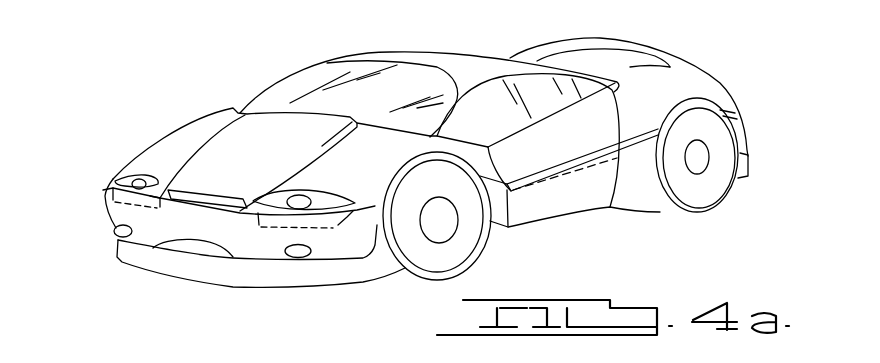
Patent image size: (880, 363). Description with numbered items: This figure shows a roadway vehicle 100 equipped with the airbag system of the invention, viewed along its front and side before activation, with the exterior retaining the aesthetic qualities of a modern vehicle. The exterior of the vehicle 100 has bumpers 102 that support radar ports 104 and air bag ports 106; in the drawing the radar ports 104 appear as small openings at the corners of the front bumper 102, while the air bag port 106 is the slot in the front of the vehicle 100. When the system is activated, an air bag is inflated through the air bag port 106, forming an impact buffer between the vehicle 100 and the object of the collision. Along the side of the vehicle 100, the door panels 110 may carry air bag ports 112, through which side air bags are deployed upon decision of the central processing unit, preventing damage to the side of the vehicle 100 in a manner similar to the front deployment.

The roadway vehicle 100 is at (140, 117).
The bumpers 102 is at (247, 243).
The radar ports 104 is at (113, 232).
The air bag ports 106 is at (203, 197).
The door panels 110 is at (577, 165).
The air bag ports 112 is at (665, 195).